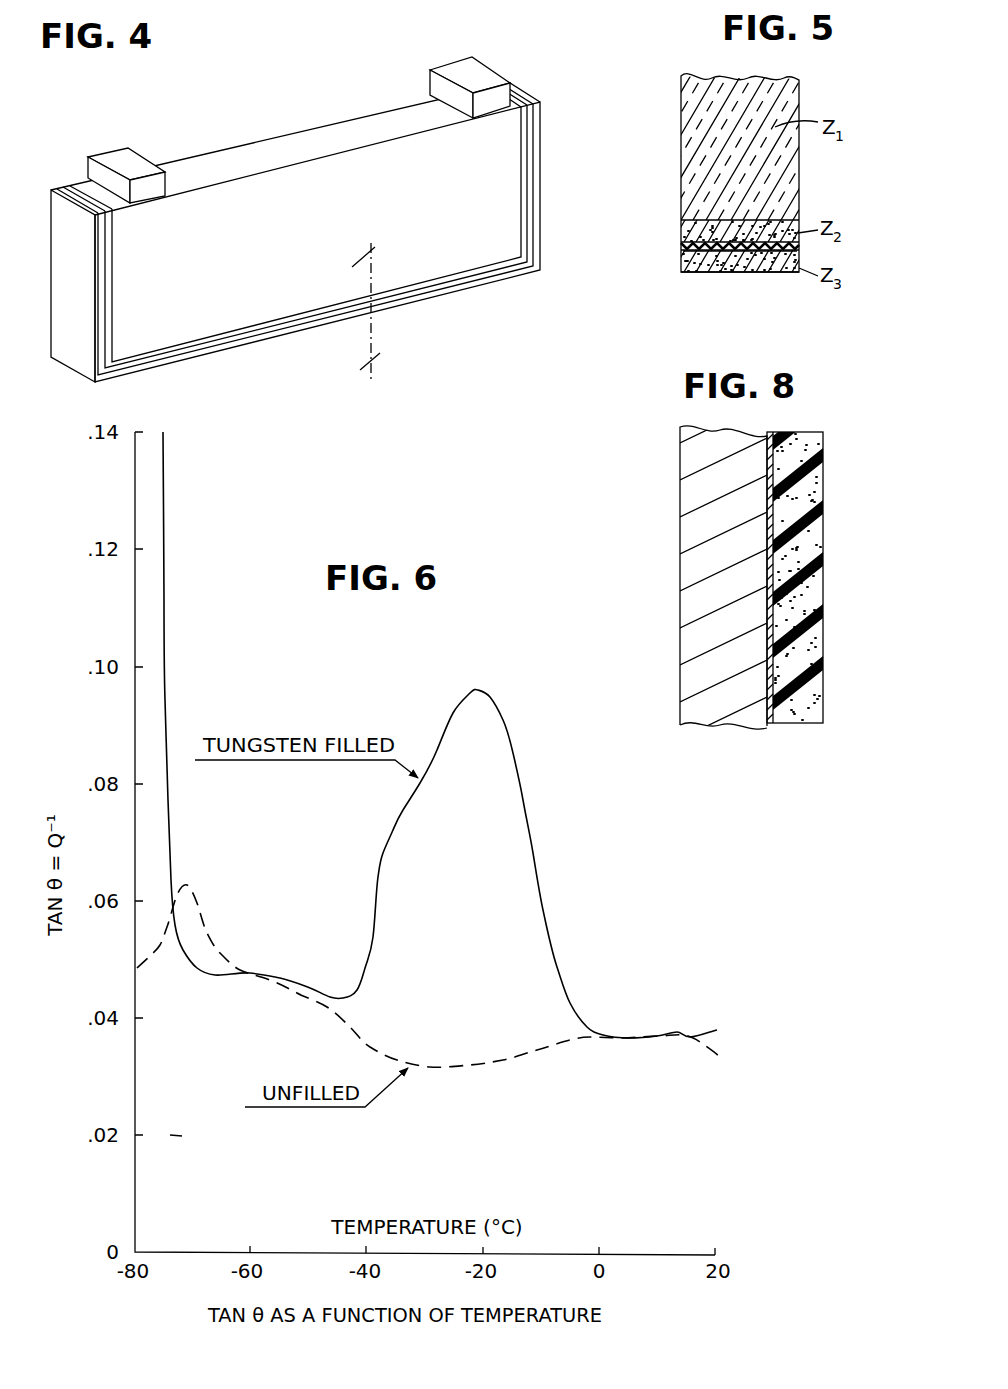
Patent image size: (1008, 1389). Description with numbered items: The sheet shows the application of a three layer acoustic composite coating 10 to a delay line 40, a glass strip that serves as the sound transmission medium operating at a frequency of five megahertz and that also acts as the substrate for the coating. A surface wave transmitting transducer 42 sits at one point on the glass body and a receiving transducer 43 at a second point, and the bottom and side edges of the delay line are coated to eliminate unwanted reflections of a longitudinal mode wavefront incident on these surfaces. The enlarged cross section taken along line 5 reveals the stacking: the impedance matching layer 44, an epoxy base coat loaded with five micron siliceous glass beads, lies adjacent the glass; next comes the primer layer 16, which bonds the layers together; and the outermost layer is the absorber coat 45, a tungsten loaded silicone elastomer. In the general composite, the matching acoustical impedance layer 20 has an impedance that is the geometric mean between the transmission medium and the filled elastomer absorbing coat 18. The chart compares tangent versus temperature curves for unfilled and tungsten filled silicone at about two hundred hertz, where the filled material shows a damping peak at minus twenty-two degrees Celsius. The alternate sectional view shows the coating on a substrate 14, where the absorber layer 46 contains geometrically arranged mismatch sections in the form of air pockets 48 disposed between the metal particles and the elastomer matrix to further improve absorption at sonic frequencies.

In FIG. 4, the composite acoustical damping coating 10 is at (295, 208).
In FIG. 5, the composite acoustical damping coating 10 is at (710, 60).
In FIG. 8, the substrate 14 is at (700, 518).
In FIG. 4, the primer layer 16 is at (230, 342).
In FIG. 5, the primer layer 16 is at (697, 212).
In FIG. 4, the filled elastomer absorbing coat 18 is at (247, 345).
In FIG. 5, the filled elastomer absorbing coat 18 is at (695, 268).
In FIG. 4, the matching acoustical impedance layer 20 is at (268, 302).
In FIG. 5, the matching acoustical impedance layer 20 is at (687, 230).
In FIG. 4, the delay line 40 is at (317, 240).
In FIG. 5, the delay line 40 is at (712, 128).
In FIG. 4, the surface wave transmitting transducer 42 is at (117, 157).
In FIG. 4, the receiving transducer 43 is at (447, 70).
In FIG. 5, the impedance matching layer 44 is at (679, 240).
In FIG. 5, the absorber coat 45 is at (687, 257).
In FIG. 8, the absorber layer 46 is at (780, 724).
In FIG. 8, the air pockets 48 is at (789, 437).
In FIG. 4, the section line 5— 5 is at (416, 263).